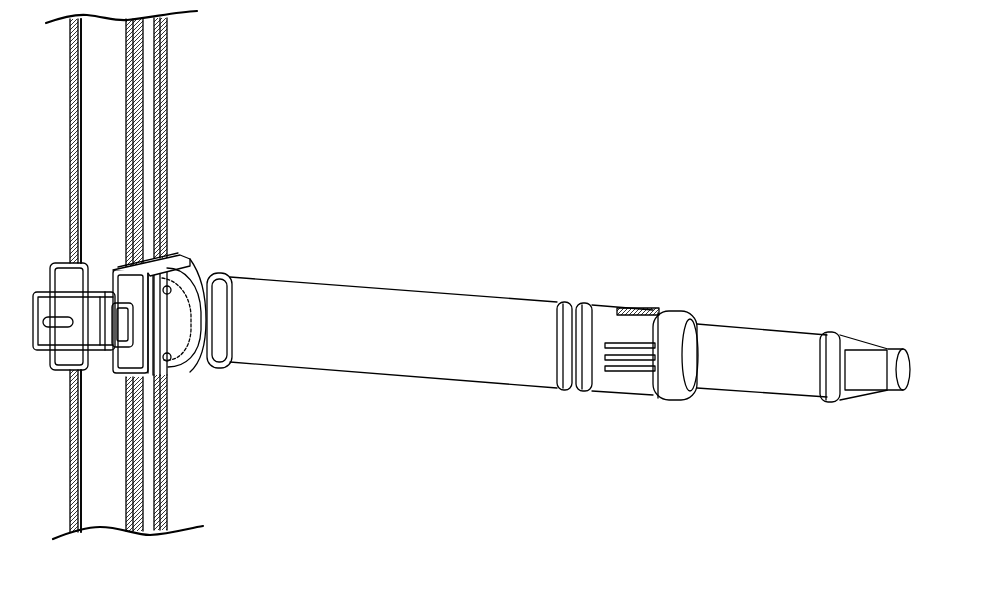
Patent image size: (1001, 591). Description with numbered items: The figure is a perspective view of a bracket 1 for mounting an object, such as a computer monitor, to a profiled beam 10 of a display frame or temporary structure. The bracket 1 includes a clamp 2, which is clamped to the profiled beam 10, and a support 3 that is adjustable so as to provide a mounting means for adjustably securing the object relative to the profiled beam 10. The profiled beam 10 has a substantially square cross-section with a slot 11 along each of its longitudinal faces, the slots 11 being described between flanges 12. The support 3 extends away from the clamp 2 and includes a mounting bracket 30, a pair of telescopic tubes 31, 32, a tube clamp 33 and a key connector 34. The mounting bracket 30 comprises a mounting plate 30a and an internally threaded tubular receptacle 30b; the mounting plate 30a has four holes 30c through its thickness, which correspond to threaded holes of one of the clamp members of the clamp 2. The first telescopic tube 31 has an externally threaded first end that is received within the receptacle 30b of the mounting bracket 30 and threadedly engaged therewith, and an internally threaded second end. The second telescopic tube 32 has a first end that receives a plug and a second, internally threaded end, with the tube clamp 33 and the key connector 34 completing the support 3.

The bracket 1 is at (763, 85).
The clamp 2 is at (190, 225).
The support 3 is at (690, 233).
The profiled beam 10 is at (187, 125).
The slot 11 is at (117, 190).
The flange 12 is at (127, 135).
The mounting bracket 30 is at (298, 428).
The mounting plate 30a is at (170, 358).
The internally threaded tubular receptacle 30b is at (203, 358).
The holes 30c is at (165, 289).
The first telescopic tube 31 is at (397, 346).
The second telescopic tube 32 is at (778, 370).
The tube clamp 33 is at (703, 404).
The key connector 34 is at (908, 403).